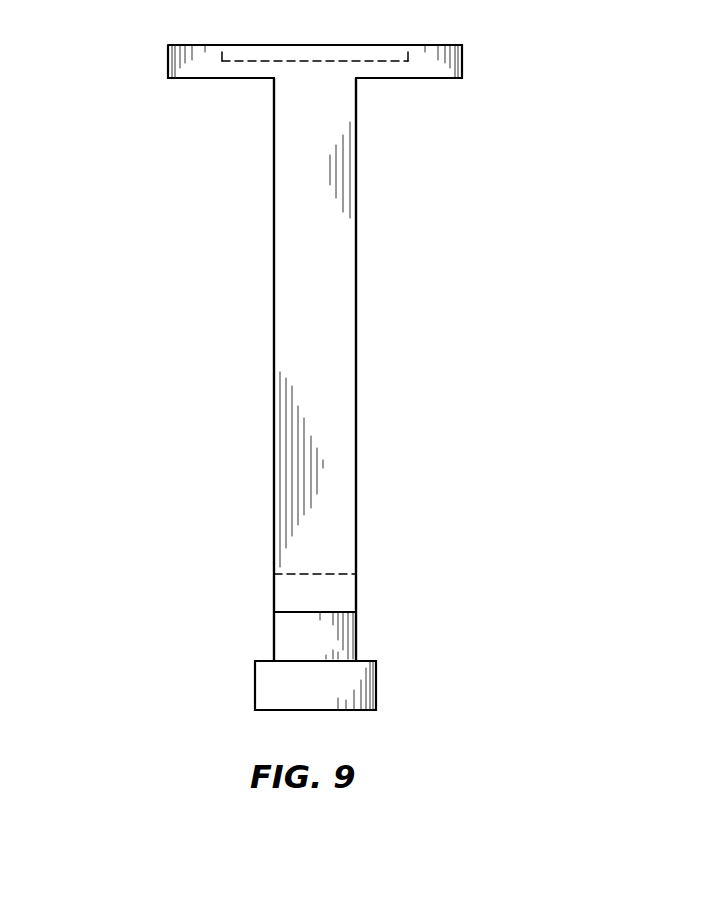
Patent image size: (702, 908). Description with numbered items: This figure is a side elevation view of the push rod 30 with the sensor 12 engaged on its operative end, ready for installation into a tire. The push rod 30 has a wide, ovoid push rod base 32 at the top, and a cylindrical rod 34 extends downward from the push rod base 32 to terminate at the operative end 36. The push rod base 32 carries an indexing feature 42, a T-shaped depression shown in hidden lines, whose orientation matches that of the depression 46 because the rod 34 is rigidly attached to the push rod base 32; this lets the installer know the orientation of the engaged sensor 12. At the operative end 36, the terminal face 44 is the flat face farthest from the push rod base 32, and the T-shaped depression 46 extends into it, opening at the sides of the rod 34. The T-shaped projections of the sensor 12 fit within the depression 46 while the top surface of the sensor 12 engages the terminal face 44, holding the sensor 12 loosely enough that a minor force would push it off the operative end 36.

The sensor 12 is at (365, 660).
The push rod 30 is at (349, 373).
The push rod base 32 is at (430, 78).
The rod 34 is at (349, 299).
The operative end 36 is at (335, 608).
The indexing feature 42 is at (315, 45).
The terminal face 44 is at (296, 612).
The depression 46 is at (287, 589).